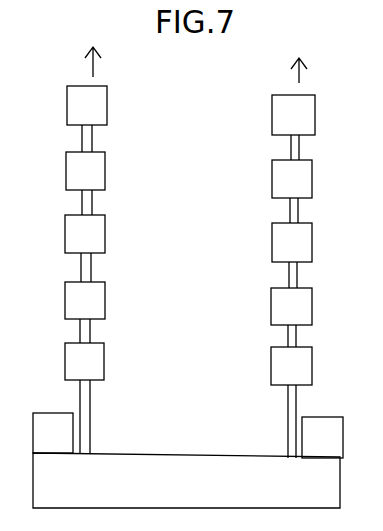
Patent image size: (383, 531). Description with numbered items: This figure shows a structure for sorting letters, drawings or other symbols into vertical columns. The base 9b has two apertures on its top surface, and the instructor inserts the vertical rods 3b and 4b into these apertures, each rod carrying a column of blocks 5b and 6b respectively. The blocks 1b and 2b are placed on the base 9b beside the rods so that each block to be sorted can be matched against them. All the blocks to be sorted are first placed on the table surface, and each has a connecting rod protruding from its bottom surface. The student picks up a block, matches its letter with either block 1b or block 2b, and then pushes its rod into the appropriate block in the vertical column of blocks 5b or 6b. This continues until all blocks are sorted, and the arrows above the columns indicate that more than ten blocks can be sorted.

The block 1b is at (57, 410).
The block 2b is at (314, 418).
The vertical rod 3b is at (97, 424).
The vertical rod 4b is at (282, 422).
The blocks 5b is at (105, 368).
The blocks 6b is at (266, 368).
The base 9b is at (217, 448).